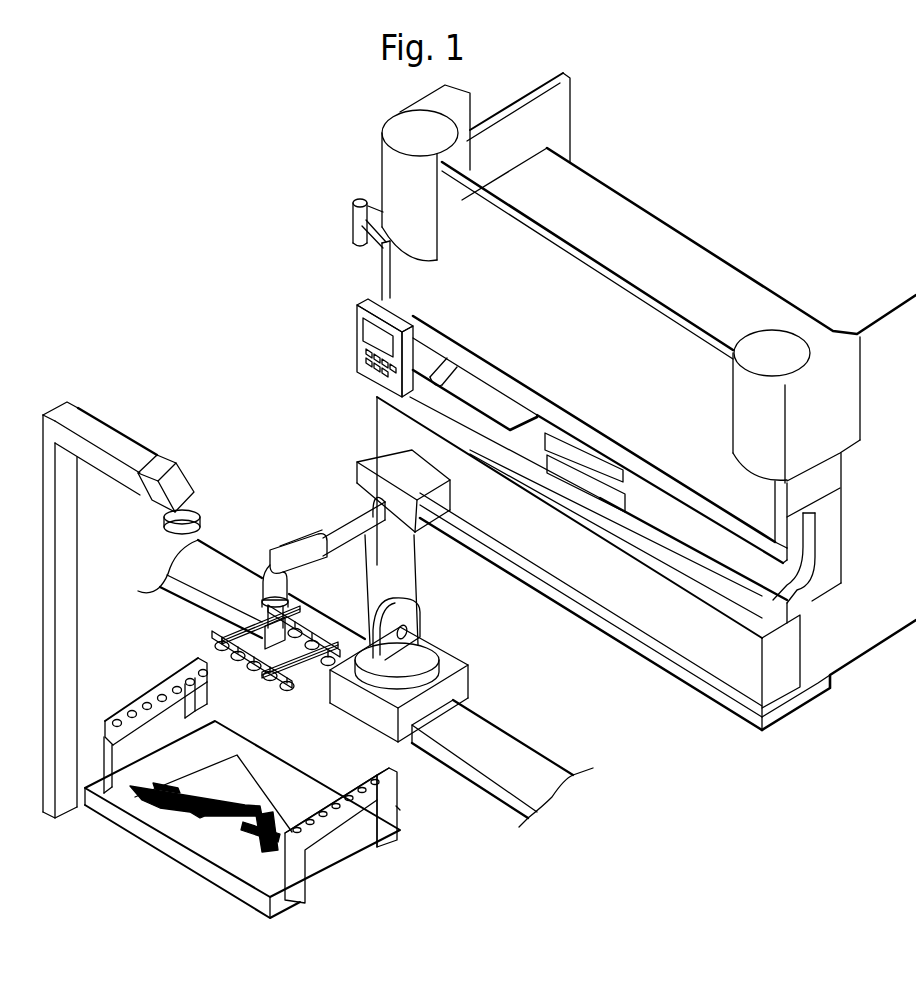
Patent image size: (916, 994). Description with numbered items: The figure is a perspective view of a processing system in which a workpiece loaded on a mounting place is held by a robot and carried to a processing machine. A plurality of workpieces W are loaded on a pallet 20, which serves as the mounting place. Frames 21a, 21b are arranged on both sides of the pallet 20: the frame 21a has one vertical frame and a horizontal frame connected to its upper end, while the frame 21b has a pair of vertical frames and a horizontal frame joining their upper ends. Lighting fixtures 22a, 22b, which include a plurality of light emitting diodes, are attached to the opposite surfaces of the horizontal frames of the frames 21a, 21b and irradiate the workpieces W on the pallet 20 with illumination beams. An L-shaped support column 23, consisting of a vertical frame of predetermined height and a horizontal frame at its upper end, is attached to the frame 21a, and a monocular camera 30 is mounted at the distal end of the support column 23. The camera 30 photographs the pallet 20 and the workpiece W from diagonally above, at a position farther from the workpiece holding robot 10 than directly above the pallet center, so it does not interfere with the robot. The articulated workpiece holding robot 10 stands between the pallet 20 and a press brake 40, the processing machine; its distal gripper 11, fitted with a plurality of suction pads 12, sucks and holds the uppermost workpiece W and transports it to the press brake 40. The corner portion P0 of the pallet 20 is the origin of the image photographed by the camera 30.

The workpiece holding robot 10 is at (302, 533).
The gripper 11 is at (312, 630).
The suction pads 12 is at (238, 660).
The pallet 20 is at (227, 882).
The frame 21a is at (92, 724).
The frame 21b is at (342, 820).
The lighting fixture 22a is at (210, 675).
The lighting fixture 22b is at (353, 783).
The support column 23 is at (65, 410).
The camera 30 is at (197, 505).
The press brake 40 is at (647, 342).
The workpiece W is at (240, 828).
The corner portion P0 is at (400, 808).